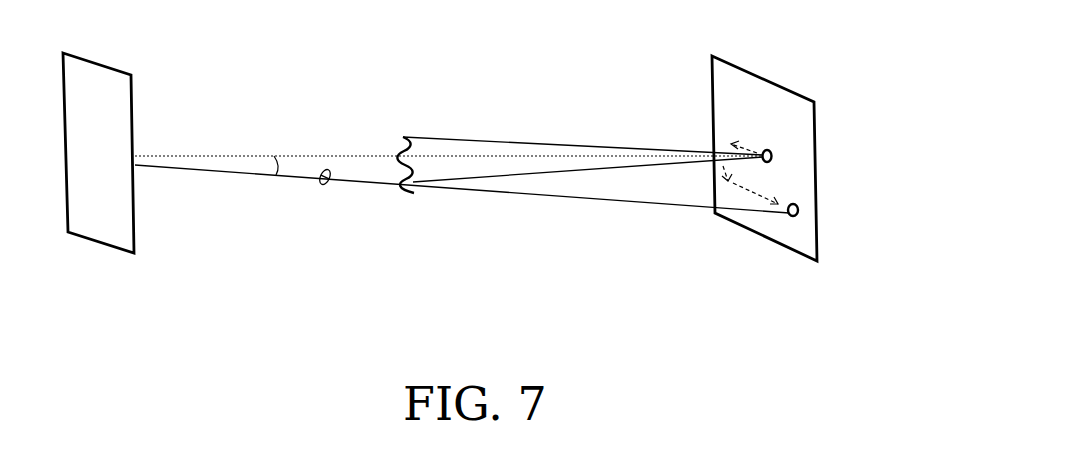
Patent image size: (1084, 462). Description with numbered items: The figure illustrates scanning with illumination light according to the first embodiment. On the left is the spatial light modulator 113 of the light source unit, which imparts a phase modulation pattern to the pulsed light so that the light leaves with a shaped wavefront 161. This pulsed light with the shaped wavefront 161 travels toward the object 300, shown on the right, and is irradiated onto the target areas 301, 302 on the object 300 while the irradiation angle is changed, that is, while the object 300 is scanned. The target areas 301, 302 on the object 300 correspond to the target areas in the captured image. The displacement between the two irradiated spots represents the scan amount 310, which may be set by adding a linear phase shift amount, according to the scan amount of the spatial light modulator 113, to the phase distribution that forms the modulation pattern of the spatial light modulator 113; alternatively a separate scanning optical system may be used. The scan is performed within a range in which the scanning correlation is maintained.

The spatial light modulator 113 is at (87, 186).
The wavefront 161 is at (539, 129).
The object 300 is at (764, 132).
The target area 301 is at (773, 155).
The target area 302 is at (845, 238).
The scan amount 310 is at (723, 227).